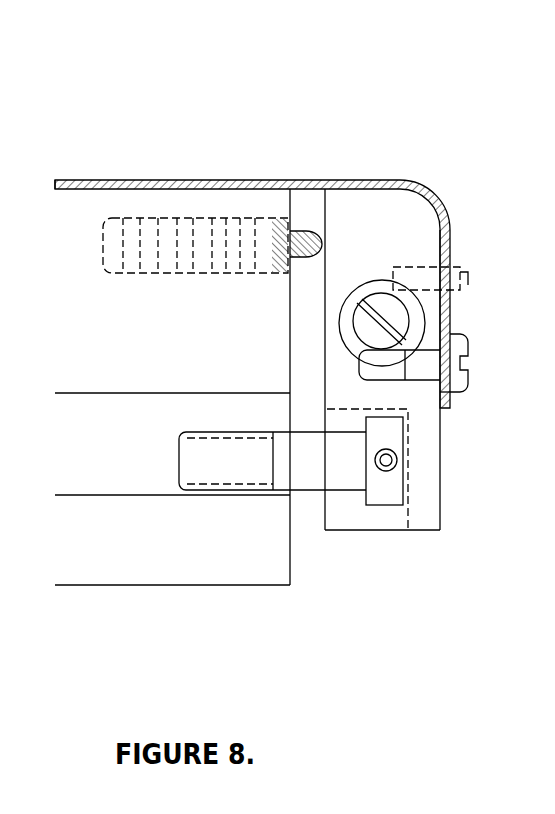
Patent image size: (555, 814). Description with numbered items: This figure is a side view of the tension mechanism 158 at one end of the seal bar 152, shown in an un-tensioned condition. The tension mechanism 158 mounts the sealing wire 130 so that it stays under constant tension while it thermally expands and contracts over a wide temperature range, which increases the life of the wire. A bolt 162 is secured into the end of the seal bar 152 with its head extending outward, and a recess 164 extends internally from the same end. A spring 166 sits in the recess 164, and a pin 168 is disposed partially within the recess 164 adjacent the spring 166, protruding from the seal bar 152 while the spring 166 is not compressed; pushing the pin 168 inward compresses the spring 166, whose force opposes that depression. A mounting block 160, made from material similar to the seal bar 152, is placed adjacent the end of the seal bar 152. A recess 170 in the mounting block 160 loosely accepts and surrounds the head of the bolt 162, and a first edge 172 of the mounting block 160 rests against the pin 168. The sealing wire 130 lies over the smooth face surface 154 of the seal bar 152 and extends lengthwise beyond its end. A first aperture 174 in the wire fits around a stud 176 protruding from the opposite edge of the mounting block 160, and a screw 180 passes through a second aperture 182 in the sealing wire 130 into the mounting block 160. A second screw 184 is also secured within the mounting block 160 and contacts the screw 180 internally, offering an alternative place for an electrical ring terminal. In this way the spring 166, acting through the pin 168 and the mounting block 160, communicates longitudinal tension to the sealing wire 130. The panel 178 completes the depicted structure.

The tension mechanism 158 is at (270, 72).
The sealing wire 130 is at (108, 174).
The smooth face surface 154 is at (82, 192).
The mounting block 160 is at (400, 224).
The first edge 172 is at (322, 294).
The panel 178 is at (440, 440).
The seal bar 152 is at (121, 472).
The recess 164 is at (160, 275).
The spring 166 is at (232, 275).
The pin 168 is at (316, 233).
The first aperture 174 is at (448, 266).
The stud 176 is at (462, 278).
The second screw 184 is at (408, 321).
The screw 180 is at (468, 378).
The second aperture 182 is at (452, 394).
The bolt 162 is at (308, 480).
The recess 170 is at (388, 520).